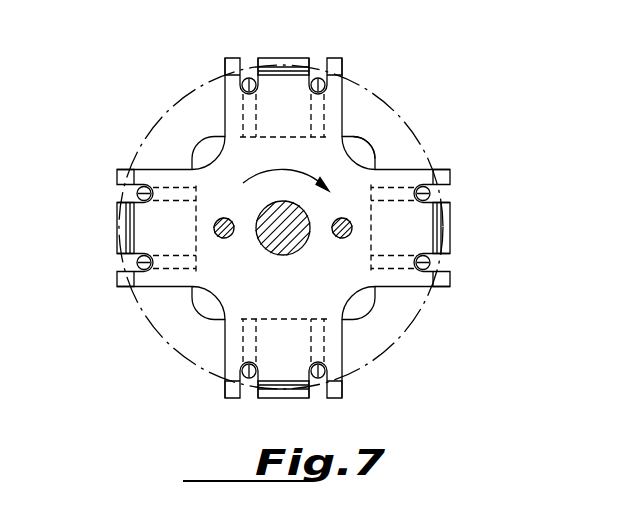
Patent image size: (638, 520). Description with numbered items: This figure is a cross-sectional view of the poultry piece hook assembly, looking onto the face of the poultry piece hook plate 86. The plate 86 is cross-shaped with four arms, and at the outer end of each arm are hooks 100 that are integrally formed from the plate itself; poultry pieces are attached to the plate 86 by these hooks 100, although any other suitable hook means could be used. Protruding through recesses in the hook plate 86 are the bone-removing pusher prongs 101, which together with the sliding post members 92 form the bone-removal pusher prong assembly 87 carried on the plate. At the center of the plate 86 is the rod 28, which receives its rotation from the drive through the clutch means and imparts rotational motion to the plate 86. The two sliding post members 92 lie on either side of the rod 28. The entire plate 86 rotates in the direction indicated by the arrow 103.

The rod 28 is at (286, 240).
The poultry piece hook plate 86 is at (372, 163).
The bone-removal pusher prong assembly 87 is at (357, 140).
The sliding post members 92 is at (224, 238).
The hooks 100 is at (276, 68).
The bone-removing pusher prongs 101 is at (252, 83).
The arrow 103 is at (286, 167).